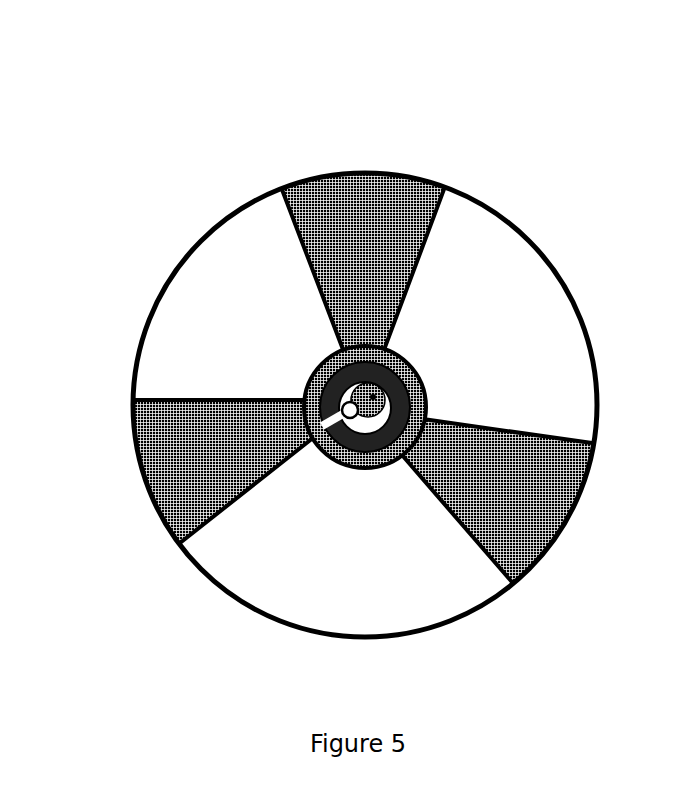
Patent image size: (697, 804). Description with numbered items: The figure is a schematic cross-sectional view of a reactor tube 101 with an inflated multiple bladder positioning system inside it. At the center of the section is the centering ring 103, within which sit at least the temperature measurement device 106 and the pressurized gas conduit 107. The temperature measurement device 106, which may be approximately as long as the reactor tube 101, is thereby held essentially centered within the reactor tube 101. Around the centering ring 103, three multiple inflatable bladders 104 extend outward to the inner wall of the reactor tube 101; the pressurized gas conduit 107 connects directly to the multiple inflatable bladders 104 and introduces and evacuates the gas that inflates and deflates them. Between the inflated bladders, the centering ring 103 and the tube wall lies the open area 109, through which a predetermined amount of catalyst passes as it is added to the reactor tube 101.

The reactor tube 101 is at (217, 203).
The centering ring 103 is at (365, 362).
The multiple inflatable bladders 104 is at (478, 467).
The temperature measurement device 106 is at (376, 395).
The pressurized gas conduit 107 is at (346, 400).
The area between multiple inflatable bladders 109 is at (495, 342).